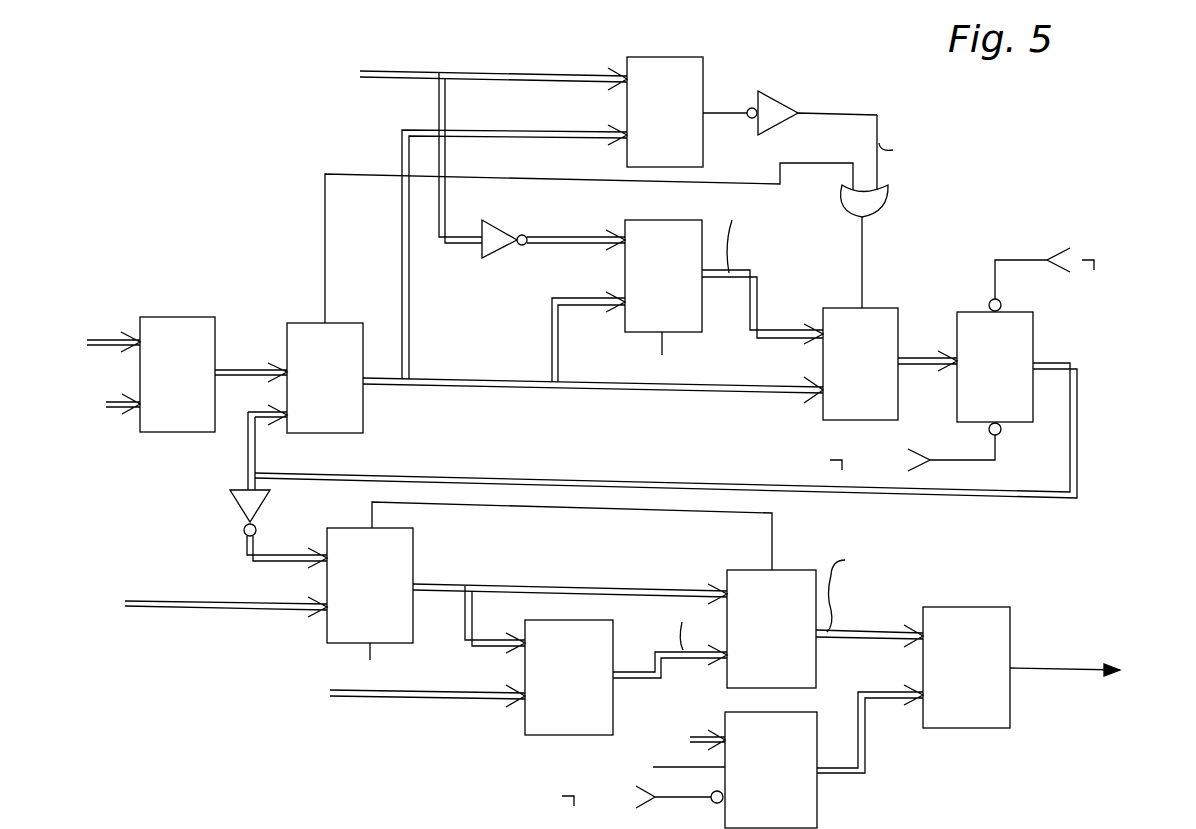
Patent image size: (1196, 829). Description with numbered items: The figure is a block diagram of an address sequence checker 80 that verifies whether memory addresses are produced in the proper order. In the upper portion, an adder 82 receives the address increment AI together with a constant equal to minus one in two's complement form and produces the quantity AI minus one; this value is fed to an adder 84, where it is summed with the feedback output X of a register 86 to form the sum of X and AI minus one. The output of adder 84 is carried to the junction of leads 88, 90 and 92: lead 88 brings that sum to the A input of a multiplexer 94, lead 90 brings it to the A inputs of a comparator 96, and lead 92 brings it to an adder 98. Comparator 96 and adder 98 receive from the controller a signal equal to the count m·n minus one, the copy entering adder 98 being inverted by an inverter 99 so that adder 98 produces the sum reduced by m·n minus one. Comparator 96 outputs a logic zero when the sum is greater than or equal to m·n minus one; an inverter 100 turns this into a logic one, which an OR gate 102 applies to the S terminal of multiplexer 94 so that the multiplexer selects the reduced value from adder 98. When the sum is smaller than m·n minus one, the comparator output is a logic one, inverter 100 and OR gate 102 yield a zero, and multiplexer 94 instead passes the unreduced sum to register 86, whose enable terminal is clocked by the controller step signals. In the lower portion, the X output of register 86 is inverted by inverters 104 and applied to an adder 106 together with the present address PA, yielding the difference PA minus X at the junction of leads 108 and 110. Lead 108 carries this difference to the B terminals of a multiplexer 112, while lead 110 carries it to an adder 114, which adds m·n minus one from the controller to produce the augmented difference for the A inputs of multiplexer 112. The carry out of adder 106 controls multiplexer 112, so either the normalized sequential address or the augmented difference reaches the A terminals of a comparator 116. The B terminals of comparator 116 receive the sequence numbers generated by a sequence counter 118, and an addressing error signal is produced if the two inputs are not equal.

The address computation circuit 80 is at (175, 497).
The adder 82 is at (178, 317).
The adder 84 is at (345, 323).
The register 86 is at (1035, 328).
The lead 88 is at (646, 389).
The lead 90 is at (409, 327).
The lead 92 is at (552, 333).
The multiplexer 94 is at (882, 308).
The comparator 96 is at (655, 62).
The adder 98 is at (625, 275).
The inverter 99 is at (492, 235).
The inverter 100 is at (776, 102).
The OR gate 102 is at (885, 200).
The inverters 104 is at (245, 503).
The adder 106 is at (398, 551).
The lead 108 is at (633, 590).
The lead 110 is at (462, 628).
The multiplexer 112 is at (748, 590).
The adder 114 is at (613, 657).
The comparator 116 is at (970, 620).
The sequence counter 118 is at (808, 805).